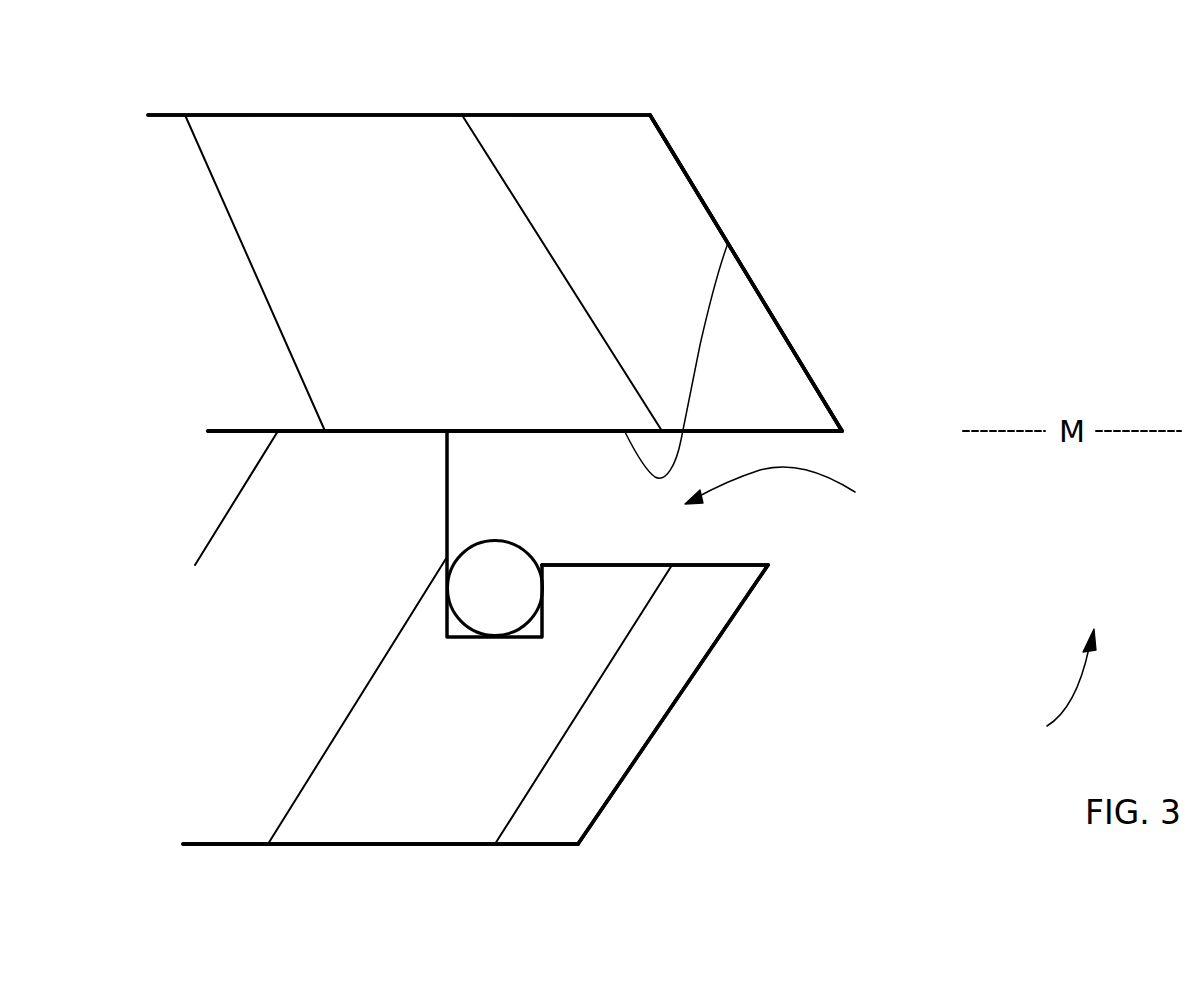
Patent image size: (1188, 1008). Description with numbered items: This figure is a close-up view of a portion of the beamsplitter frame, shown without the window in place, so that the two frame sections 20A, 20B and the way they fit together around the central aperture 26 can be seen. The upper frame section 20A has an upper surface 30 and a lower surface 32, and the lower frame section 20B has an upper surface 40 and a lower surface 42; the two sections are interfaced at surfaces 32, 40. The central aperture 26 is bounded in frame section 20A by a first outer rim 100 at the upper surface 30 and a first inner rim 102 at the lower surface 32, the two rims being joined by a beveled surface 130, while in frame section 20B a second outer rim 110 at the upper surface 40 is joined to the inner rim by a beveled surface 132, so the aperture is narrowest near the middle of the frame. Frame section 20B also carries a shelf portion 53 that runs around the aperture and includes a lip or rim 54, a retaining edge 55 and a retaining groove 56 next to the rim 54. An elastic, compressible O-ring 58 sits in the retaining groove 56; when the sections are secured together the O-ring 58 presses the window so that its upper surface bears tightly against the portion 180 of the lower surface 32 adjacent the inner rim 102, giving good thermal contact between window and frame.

The frame section 20A is at (398, 282).
The frame section 20B is at (298, 620).
The upper surface 30 is at (470, 114).
The lower surface 32 is at (243, 431).
The upper surface 40 is at (350, 431).
The lower surface 42 is at (423, 845).
The shelf portion 53 is at (794, 490).
The lip or rim 54 is at (768, 565).
The retaining edge 55 is at (447, 455).
The retaining groove 56 is at (518, 638).
The O-ring 58 is at (515, 613).
The first outer rim 100 is at (650, 115).
The first inner rim 102 is at (842, 431).
The second outer rim 110 is at (578, 843).
The beveled surface 130 is at (772, 310).
The beveled surface 132 is at (713, 647).
The portion of lower surface 180 is at (728, 243).
The central aperture 26 is at (1048, 689).